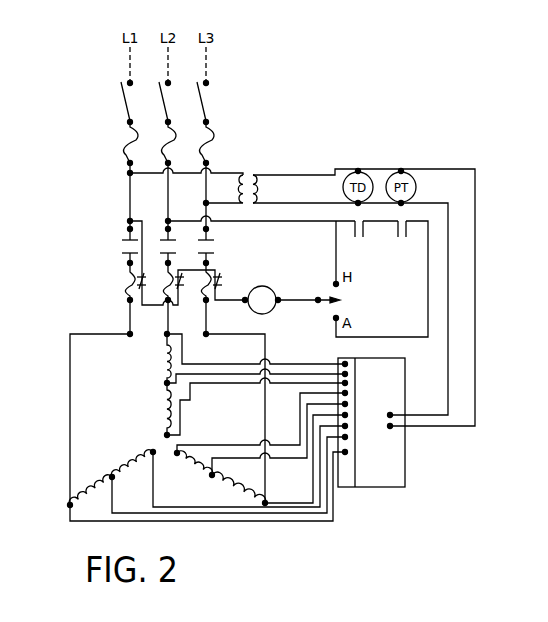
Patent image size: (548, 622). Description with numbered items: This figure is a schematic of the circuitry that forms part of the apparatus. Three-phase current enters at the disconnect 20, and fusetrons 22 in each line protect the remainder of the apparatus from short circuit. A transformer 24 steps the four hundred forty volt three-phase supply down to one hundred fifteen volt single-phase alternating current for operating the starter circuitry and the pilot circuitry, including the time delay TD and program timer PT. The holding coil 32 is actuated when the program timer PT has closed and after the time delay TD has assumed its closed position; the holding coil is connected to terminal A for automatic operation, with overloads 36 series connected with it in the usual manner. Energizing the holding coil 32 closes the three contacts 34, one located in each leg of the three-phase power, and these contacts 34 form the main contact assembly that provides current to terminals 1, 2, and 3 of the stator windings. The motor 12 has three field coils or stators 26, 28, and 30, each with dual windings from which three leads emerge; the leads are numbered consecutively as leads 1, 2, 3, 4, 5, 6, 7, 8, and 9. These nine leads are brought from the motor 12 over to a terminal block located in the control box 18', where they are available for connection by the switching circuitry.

The stator winding lead 1 is at (68, 504).
The stator winding lead 2 is at (166, 333).
The stator winding lead 3 is at (266, 501).
The stator winding lead 4 is at (111, 476).
The stator winding lead 5 is at (165, 383).
The stator winding lead 6 is at (214, 476).
The stator winding lead 7 is at (152, 451).
The stator winding lead 8 is at (165, 434).
The stator winding lead 9 is at (251, 436).
The motor 12 is at (207, 427).
The control box 18' is at (400, 422).
The disconnect 20 is at (220, 84).
The fusetrons 22 is at (224, 136).
The transformer 24 is at (252, 174).
The field coil 26 is at (118, 453).
The field coil 28 is at (136, 353).
The field coil 30 is at (205, 478).
The holding coil 32 is at (270, 288).
The contacts 34 is at (222, 252).
The overloads 36 is at (121, 272).